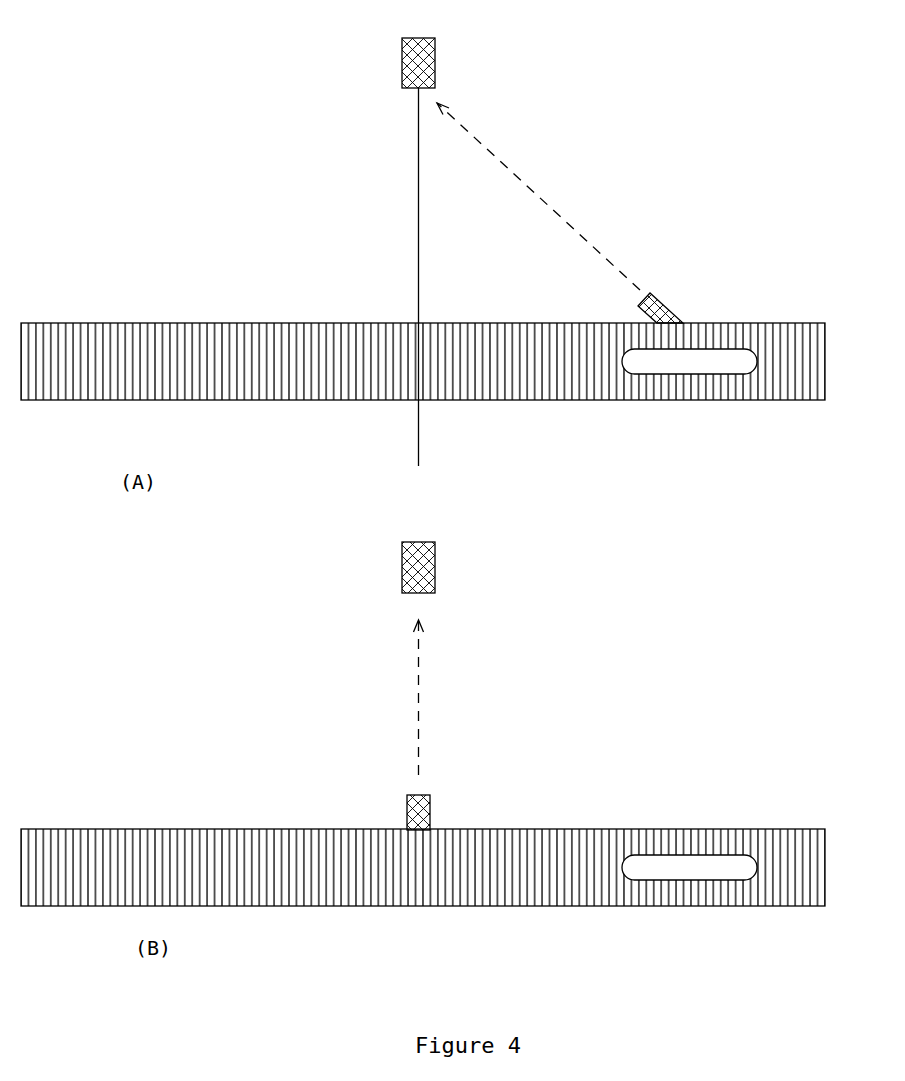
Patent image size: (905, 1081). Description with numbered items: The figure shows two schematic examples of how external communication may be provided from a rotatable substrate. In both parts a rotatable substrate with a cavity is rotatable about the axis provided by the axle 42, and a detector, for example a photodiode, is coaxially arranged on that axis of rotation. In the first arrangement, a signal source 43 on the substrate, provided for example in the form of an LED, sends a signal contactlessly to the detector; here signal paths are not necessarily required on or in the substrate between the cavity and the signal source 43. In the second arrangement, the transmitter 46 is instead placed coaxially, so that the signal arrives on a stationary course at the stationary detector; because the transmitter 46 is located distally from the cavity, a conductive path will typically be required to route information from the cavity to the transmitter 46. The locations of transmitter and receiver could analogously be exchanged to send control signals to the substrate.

The axle 42 is at (418, 265).
The signal source 43 is at (663, 298).
The transmitter 46 is at (430, 812).